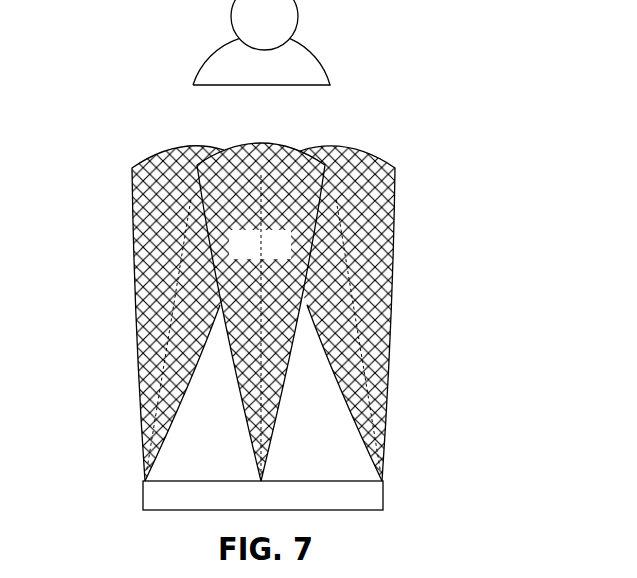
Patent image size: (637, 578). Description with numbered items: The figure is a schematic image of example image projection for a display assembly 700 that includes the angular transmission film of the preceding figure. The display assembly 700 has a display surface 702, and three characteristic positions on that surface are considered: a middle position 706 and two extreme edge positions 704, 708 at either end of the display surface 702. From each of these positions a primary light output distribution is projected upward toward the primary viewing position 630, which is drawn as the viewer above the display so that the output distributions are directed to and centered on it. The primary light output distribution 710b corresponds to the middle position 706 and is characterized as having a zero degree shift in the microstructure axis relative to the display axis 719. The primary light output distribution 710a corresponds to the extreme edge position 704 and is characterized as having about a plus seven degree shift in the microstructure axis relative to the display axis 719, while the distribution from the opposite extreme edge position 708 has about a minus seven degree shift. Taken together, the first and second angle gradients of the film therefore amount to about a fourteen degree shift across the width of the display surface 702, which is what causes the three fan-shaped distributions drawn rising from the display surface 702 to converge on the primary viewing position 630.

The primary viewing position 630 is at (252, 66).
The display assembly 700 is at (261, 316).
The display surface 702 is at (158, 481).
The extreme edge position 704 is at (143, 481).
The middle position 706 is at (261, 480).
The extreme edge position 708 is at (383, 476).
The primary light output distribution 710a is at (133, 217).
The primary light output distribution 710b is at (285, 256).
The display axis 719 is at (265, 405).